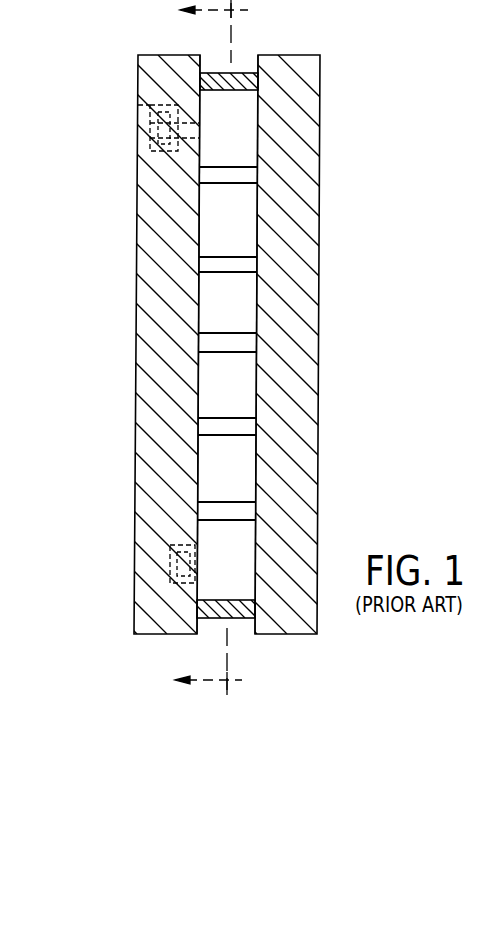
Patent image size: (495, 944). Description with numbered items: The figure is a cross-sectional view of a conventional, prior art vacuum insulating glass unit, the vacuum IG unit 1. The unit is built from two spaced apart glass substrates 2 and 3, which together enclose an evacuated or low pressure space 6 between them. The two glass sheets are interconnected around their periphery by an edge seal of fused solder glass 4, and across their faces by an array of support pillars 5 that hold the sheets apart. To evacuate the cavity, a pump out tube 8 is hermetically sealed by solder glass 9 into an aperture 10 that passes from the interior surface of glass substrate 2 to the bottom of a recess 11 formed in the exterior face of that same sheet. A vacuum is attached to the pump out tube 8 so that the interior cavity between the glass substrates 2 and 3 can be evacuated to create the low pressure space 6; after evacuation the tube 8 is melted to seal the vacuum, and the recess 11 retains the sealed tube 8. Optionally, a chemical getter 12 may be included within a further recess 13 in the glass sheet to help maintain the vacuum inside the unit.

The vacuum IG unit 1 is at (333, 134).
The glass substrate 2 is at (136, 392).
The glass substrate 3 is at (296, 283).
The edge seal of fused solder glass 4 is at (242, 79).
The support pillars 5 is at (233, 346).
The low pressure space 6 is at (215, 457).
The pump out tube 8 is at (146, 128).
The solder glass 9 is at (153, 118).
The aperture 10 is at (230, 609).
The recess 11 is at (148, 158).
The chemical getter 12 is at (173, 557).
The recess 13 is at (173, 591).